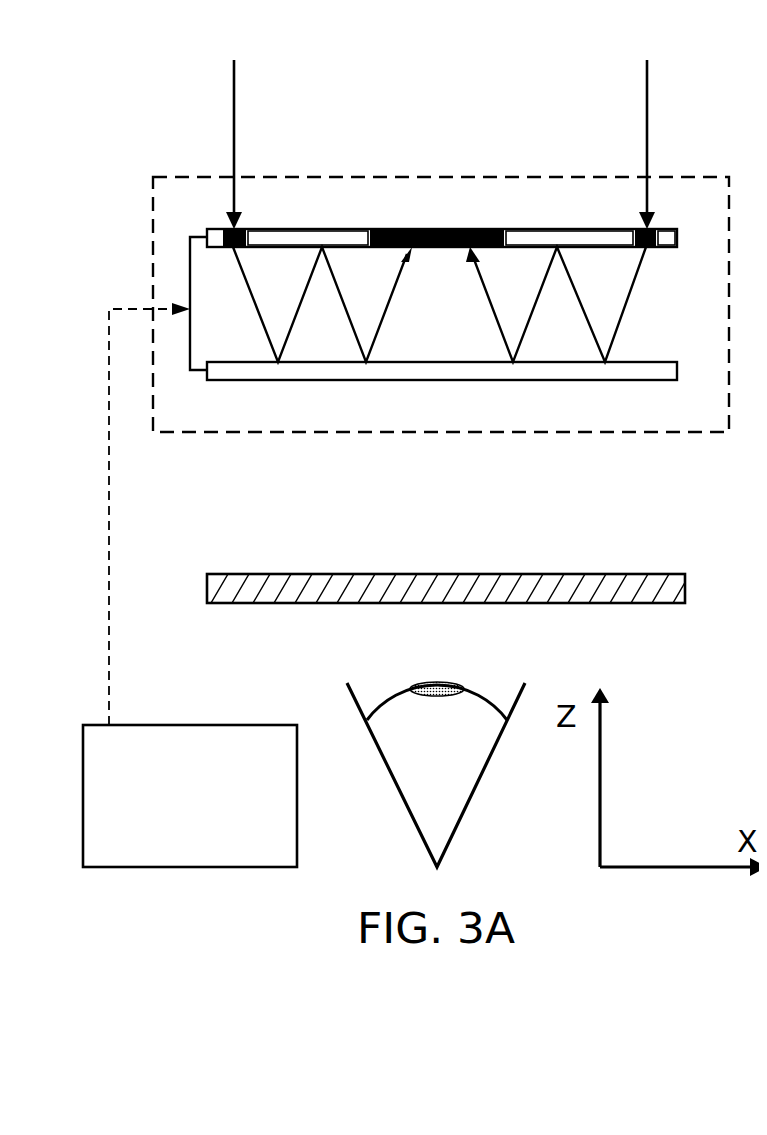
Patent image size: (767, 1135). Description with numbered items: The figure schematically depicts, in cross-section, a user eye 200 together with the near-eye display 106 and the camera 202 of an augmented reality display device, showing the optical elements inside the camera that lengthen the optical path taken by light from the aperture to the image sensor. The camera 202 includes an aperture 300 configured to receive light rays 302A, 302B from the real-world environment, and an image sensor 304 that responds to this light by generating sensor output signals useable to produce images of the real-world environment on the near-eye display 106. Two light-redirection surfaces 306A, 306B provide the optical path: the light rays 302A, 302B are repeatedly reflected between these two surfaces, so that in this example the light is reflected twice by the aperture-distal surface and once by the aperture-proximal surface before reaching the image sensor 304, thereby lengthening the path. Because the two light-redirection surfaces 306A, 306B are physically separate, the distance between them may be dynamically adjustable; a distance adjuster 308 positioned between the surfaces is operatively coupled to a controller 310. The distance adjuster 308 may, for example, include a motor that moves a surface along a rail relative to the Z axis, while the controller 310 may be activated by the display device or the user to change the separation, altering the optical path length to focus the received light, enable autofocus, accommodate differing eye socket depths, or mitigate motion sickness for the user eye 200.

The camera 202 is at (171, 176).
The aperture 300 is at (226, 227).
The light ray 302A is at (234, 140).
The light ray 302B is at (647, 132).
The image sensor 304 is at (431, 228).
The light-redirection surface 306A is at (343, 228).
The light-redirection surface 306B is at (322, 380).
The distance adjuster 308 is at (188, 364).
The controller 310 is at (190, 796).
The near-eye display 106 is at (645, 575).
The user eye 200 is at (397, 792).